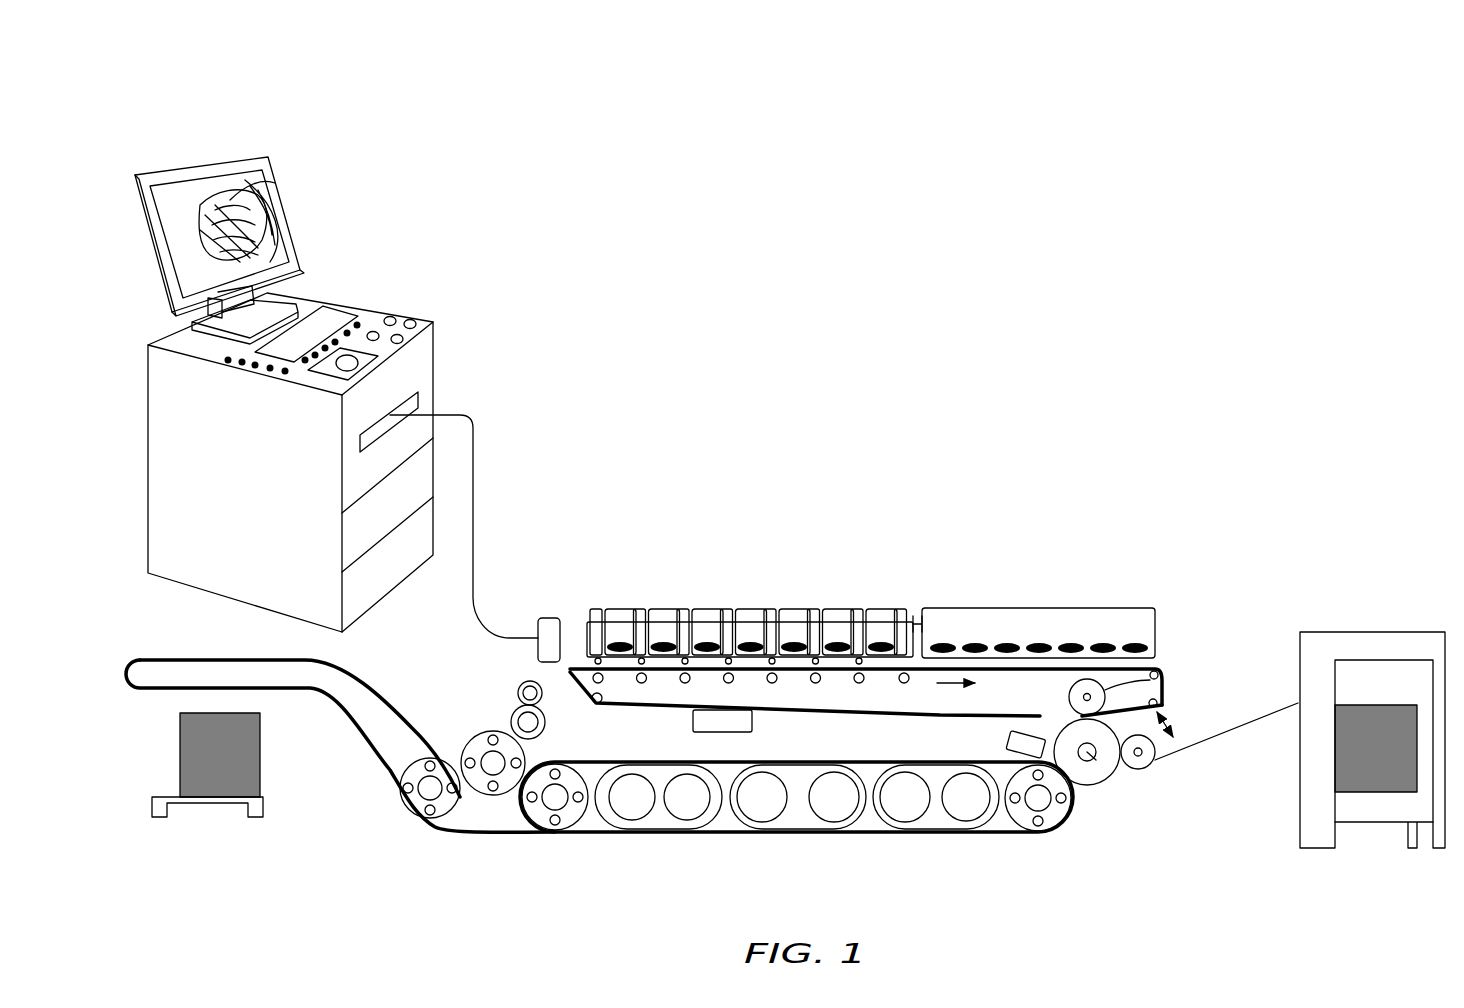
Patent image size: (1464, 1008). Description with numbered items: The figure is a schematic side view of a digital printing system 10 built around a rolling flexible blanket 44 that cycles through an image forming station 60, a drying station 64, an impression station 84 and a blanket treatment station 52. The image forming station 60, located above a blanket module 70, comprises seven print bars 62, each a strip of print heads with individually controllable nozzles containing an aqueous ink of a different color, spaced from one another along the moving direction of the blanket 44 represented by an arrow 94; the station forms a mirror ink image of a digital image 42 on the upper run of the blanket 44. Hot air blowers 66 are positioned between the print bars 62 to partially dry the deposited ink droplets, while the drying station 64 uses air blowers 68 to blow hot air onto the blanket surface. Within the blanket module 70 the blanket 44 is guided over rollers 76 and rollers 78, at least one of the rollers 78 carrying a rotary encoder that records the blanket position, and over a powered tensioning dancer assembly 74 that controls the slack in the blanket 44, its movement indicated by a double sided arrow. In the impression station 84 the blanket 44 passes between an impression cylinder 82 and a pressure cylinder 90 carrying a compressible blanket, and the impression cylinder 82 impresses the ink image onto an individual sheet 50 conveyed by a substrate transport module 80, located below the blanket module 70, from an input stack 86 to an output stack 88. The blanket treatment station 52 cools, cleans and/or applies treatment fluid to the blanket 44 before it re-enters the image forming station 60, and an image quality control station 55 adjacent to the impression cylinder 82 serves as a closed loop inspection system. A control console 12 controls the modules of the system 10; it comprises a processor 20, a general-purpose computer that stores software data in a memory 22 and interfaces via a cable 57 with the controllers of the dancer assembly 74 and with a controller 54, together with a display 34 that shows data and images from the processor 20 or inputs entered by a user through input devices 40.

The digital printing system 10 is at (1324, 150).
The control console 12 is at (128, 145).
The processor 20 is at (387, 476).
The memory 22 is at (387, 537).
The display 34 is at (288, 176).
The input devices 40 is at (372, 318).
The digital image 42 is at (172, 182).
The blanket 44 is at (1047, 714).
The sheet 50 is at (175, 705).
The blanket treatment station 52 is at (736, 735).
The controller 54 is at (530, 664).
The image quality control station 55 is at (1005, 744).
The cable 57 is at (472, 572).
The image forming station 60 is at (555, 498).
The print bars 62 is at (600, 608).
The drying station 64 is at (1057, 543).
The air blowers 66 is at (613, 608).
The air blowers 68 is at (1120, 640).
The blanket module 70 is at (1170, 646).
The dancer assembly 74 is at (1176, 716).
The rollers 76 is at (590, 703).
The rollers 78 is at (640, 683).
The substrate transport module 80 is at (697, 868).
The impression cylinder 82 is at (1100, 765).
The impression station 84 is at (1090, 796).
The input stack 86 is at (1378, 795).
The output stack 88 is at (190, 800).
The pressure cylinder 90 is at (1167, 680).
The arrow 94 is at (939, 697).